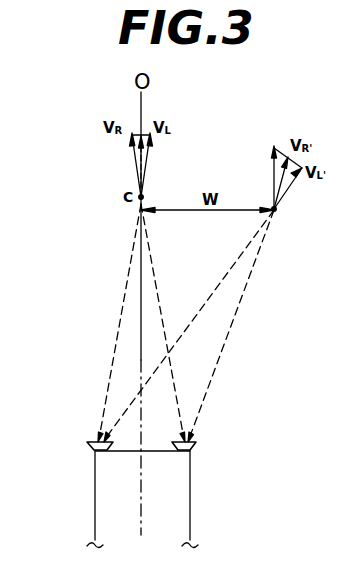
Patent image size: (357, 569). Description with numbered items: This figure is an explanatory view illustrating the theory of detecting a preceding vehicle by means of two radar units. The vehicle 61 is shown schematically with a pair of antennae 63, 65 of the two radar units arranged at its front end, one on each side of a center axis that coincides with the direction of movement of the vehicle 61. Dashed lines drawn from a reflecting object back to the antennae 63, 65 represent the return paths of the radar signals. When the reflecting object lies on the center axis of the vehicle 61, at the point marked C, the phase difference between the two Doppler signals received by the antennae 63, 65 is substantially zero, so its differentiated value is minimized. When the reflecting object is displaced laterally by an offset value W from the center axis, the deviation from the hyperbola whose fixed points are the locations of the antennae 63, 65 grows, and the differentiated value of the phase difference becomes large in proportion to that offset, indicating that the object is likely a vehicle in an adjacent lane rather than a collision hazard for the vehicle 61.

The vehicle 61 is at (190, 492).
The antenna 63 is at (196, 447).
The antenna 65 is at (87, 447).